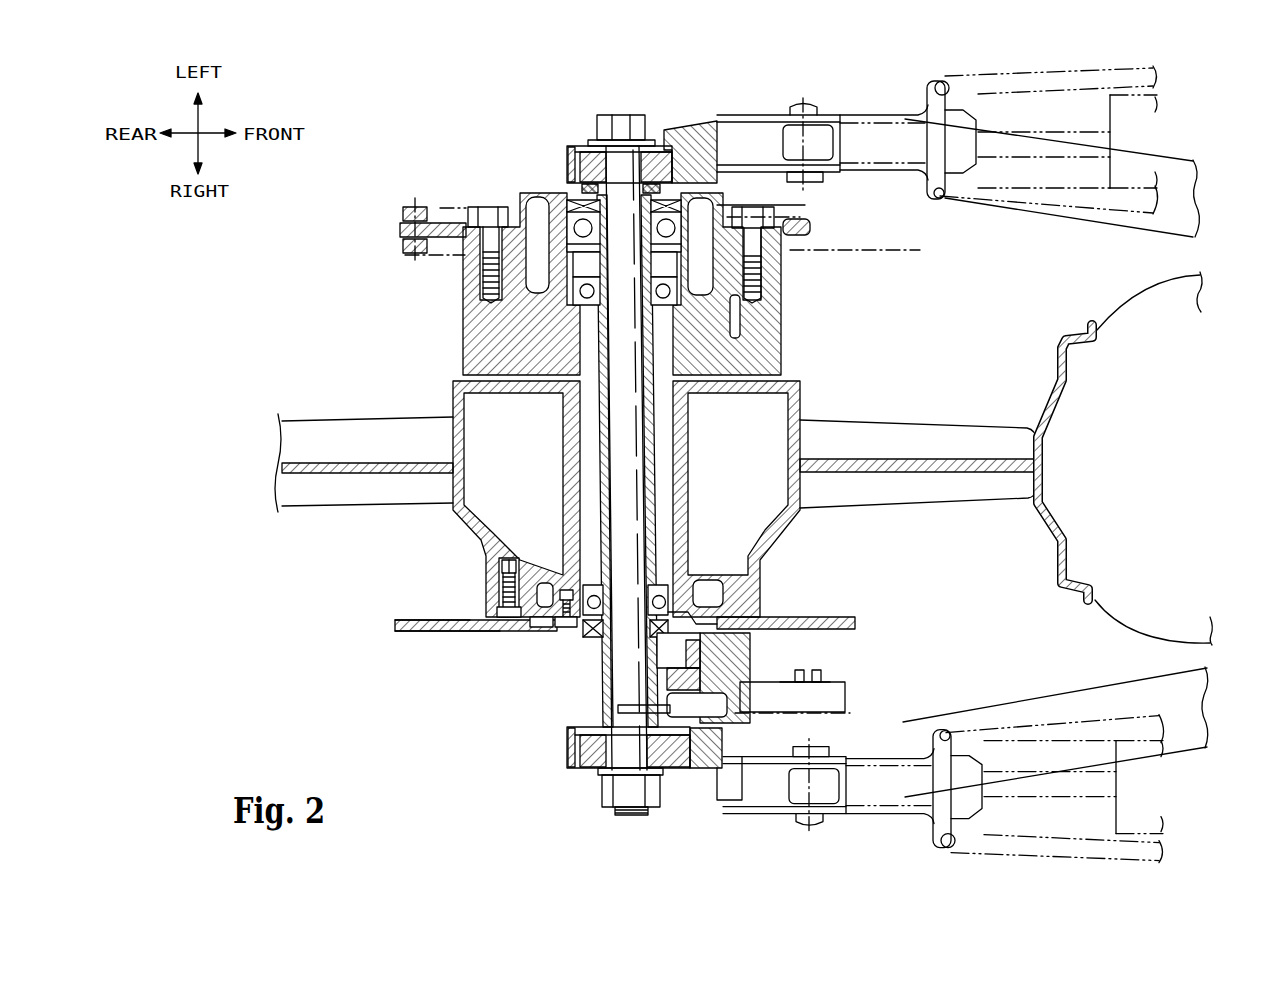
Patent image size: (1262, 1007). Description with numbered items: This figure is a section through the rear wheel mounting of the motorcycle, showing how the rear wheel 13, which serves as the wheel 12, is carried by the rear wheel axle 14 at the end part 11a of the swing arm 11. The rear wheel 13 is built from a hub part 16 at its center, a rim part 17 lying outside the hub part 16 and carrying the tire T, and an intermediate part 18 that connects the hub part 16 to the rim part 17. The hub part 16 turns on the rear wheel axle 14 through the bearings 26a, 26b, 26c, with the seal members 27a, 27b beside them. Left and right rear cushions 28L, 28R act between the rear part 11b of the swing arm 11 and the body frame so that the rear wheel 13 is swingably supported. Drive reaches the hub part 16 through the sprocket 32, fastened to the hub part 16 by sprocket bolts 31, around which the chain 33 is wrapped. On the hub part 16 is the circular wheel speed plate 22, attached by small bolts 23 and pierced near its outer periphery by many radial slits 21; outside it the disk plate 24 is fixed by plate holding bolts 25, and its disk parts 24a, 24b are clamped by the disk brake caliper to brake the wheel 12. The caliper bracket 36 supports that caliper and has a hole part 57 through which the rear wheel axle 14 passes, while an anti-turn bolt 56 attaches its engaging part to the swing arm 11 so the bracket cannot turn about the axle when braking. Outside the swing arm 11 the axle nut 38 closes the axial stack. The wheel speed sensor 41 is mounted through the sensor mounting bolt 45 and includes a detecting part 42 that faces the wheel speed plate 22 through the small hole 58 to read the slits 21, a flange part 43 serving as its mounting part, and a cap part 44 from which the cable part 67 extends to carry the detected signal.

The swing arm 11 is at (1180, 158).
The end part of the swing arm 11a is at (663, 133).
The rear part of the swing arm 11b is at (723, 117).
The wheel 12 is at (364, 511).
The rear wheel 13 is at (338, 511).
The rear wheel axle 14 is at (582, 140).
The hub part 16 is at (780, 533).
The rim part 17 is at (1033, 517).
The intermediate part 18 is at (913, 493).
The radial slits 21 is at (560, 628).
The wheel speed plate 22 is at (565, 618).
The small bolts 23 is at (545, 628).
The disk plate 24 is at (443, 630).
The disk part 24a is at (413, 631).
The disk part 24b is at (423, 618).
The plate holding bolts 25 is at (505, 622).
The bearing 26a is at (590, 617).
The bearing 26b is at (583, 291).
The bearing 26c is at (580, 226).
The seal member 27a is at (592, 640).
The seal member 27b is at (583, 195).
The left rear cushion 28L is at (1158, 62).
The right rear cushion 28R is at (1160, 862).
The sprocket bolts 31 is at (483, 207).
The sprocket 32 is at (443, 253).
The chain 33 is at (401, 245).
The caliper bracket 36 is at (760, 663).
The axle nut 38 is at (610, 797).
The wheel speed sensor 41 is at (737, 730).
The detecting part 42 is at (740, 643).
The flange part 43 is at (845, 700).
The cap part 44 is at (713, 720).
The sensor mounting bolt 45 is at (658, 790).
The anti-turn bolt 56 is at (825, 683).
The hole part 57 is at (622, 690).
The small hole 58 is at (765, 603).
The cable part 67 is at (603, 775).
The tire T is at (1113, 617).